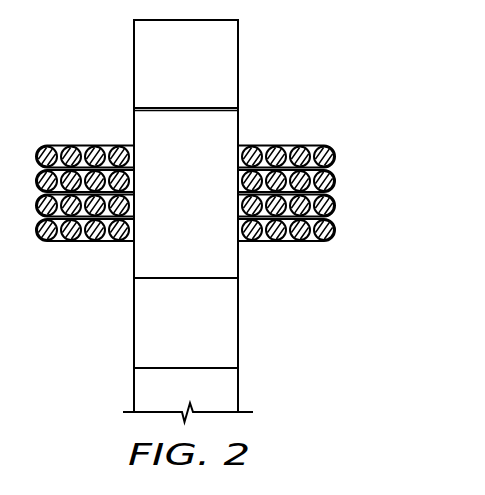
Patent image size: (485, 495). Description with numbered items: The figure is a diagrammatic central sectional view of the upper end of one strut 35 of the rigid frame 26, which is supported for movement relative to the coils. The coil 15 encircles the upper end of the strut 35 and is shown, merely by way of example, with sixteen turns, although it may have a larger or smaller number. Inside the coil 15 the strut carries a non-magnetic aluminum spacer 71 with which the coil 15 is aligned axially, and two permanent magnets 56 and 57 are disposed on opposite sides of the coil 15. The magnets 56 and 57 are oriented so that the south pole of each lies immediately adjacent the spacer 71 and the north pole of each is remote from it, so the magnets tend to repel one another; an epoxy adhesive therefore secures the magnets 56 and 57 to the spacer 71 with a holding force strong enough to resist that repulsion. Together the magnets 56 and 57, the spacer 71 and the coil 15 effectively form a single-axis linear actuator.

The permanent magnet 56 is at (134, 62).
The non-magnetic aluminum spacer 71 is at (134, 257).
The permanent magnet 57 is at (134, 322).
The rigid frame 26 is at (134, 392).
The strut 35 is at (238, 392).
The coil 15 is at (337, 183).